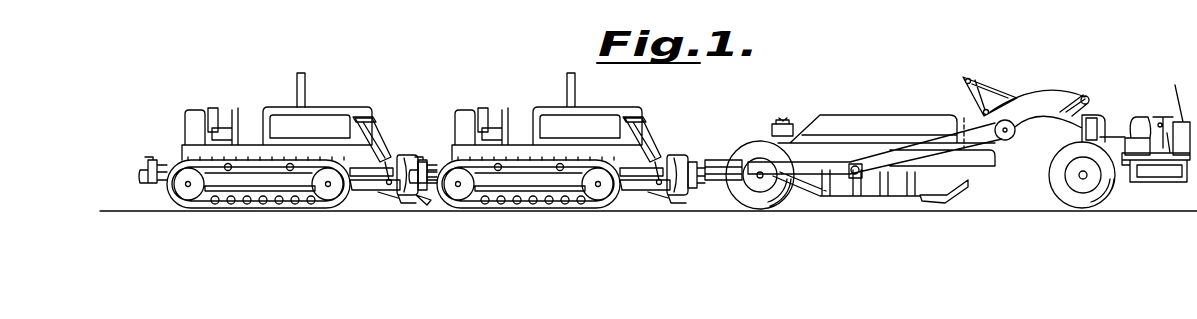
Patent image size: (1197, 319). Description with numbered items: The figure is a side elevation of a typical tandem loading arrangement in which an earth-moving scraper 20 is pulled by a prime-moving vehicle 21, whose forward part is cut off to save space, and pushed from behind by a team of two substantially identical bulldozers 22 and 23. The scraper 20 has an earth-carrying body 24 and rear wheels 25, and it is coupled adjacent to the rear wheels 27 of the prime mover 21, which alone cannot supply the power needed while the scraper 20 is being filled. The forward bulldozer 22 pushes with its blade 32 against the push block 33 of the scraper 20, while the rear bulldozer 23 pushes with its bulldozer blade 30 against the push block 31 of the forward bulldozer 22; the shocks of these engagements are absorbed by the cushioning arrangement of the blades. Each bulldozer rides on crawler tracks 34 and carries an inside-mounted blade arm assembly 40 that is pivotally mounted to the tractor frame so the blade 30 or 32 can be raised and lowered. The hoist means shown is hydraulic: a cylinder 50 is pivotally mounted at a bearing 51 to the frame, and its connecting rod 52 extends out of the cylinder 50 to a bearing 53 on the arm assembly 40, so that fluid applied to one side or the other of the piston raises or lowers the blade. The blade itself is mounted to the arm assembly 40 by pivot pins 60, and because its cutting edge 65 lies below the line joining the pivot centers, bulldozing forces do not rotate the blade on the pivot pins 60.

The earth-moving scraper 20 is at (874, 113).
The prime-moving vehicle 21 is at (1175, 96).
The bulldozer 22 is at (552, 98).
The bulldozer 23 is at (308, 90).
The earth-carrying body 24 is at (836, 118).
The rear wheels 25 is at (764, 209).
The rear wheels 27 is at (1112, 193).
The bulldozer blade 30 is at (406, 156).
The push block 31 is at (139, 178).
The blade 32 is at (681, 157).
The push block 33 is at (696, 165).
The crawler track 34 is at (340, 210).
The blade arm assembly 40 is at (380, 198).
The cylinder 50 is at (371, 140).
The bearing 51 is at (362, 122).
The connecting rod 52 is at (381, 175).
The bearing 53 is at (379, 192).
The pivot pins 60 is at (403, 201).
The cutting edge 65 is at (421, 199).